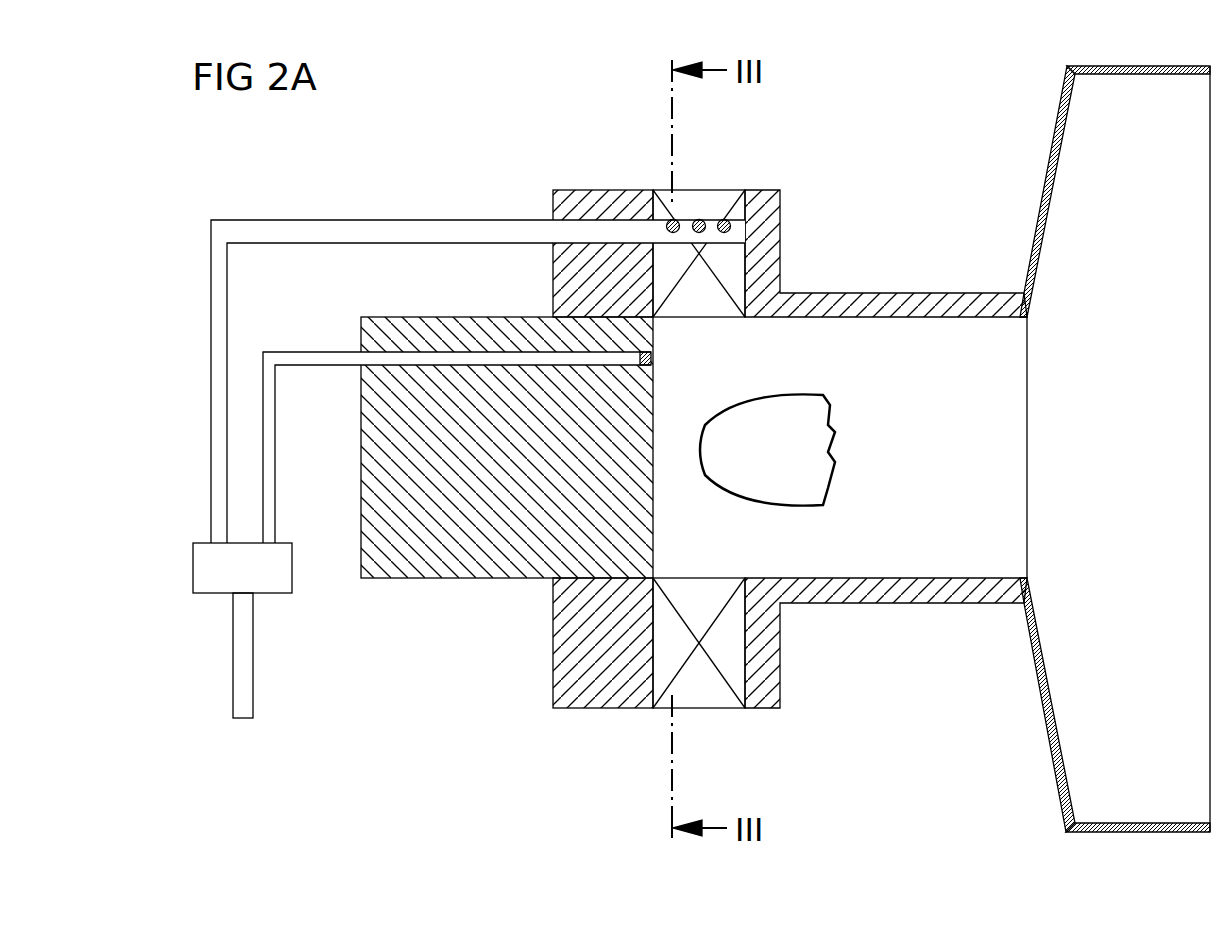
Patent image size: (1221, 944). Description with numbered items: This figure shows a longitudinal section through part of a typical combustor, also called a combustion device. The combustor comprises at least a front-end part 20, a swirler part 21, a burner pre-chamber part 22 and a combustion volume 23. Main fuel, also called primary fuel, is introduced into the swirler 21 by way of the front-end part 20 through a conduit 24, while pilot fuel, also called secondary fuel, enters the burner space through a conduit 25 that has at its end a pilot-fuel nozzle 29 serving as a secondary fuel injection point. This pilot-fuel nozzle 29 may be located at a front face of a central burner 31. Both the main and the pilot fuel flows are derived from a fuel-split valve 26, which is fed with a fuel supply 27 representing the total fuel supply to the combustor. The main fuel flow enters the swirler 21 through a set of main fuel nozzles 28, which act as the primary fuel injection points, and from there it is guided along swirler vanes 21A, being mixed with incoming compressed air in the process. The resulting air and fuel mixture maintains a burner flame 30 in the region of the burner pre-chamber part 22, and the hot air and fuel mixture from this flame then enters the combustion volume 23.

The front-end part 20 is at (530, 632).
The swirler part 21 is at (672, 403).
The swirler vanes 21A is at (732, 643).
The burner pre-chamber part 22 is at (886, 258).
The combustion volume 23 is at (1143, 216).
The conduit 24 is at (373, 230).
The conduit 25 is at (275, 458).
The fuel-split valve 26 is at (283, 567).
The fuel supply 27 is at (245, 653).
The main fuel nozzles 28 is at (722, 219).
The pilot-fuel nozzle 29 is at (655, 358).
The burner flame 30 is at (1013, 440).
The central burner 31 is at (640, 495).